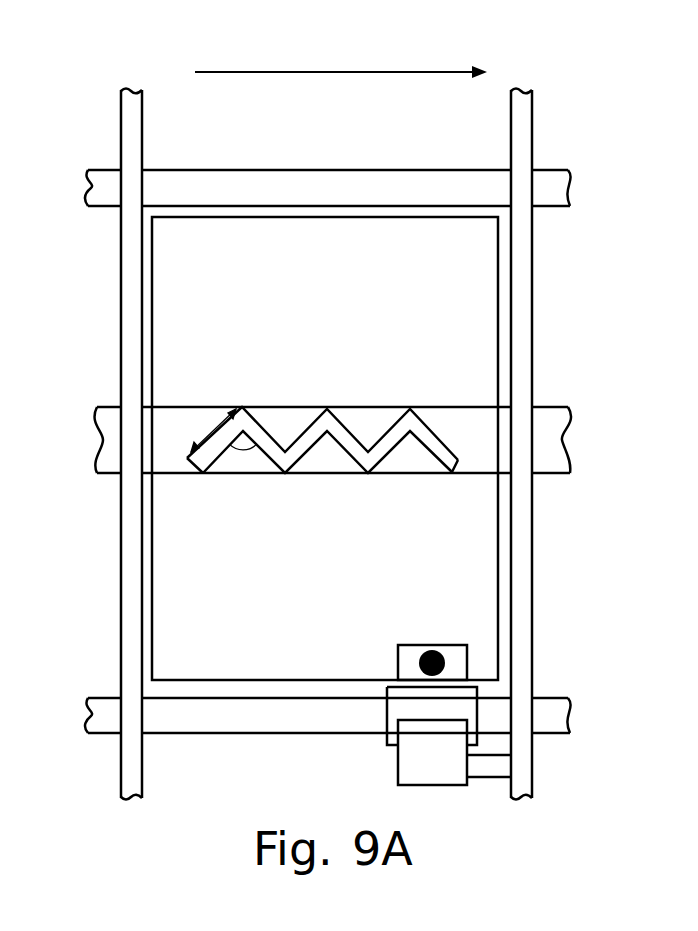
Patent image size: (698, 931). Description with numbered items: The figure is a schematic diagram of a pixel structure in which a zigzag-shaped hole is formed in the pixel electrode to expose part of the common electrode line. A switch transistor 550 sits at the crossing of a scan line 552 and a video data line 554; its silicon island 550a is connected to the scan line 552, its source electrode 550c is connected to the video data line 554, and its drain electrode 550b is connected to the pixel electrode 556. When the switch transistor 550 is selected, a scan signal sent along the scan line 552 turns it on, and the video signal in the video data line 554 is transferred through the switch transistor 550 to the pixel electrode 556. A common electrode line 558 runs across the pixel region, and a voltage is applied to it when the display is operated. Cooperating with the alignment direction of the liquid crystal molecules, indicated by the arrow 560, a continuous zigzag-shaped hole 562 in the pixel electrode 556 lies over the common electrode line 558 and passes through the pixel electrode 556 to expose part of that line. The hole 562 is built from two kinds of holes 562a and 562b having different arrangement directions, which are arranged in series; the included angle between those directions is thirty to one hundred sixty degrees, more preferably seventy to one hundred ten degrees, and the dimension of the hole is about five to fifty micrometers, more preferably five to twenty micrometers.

The switch transistor 550 is at (541, 715).
The silicon island 550a is at (457, 710).
The drain electrode 550b is at (457, 663).
The source electrode 550c is at (457, 765).
The scan line 552 is at (93, 185).
The video data line 554 is at (131, 88).
The pixel electrode 556 is at (180, 293).
The common electrode line 558 is at (112, 437).
The arrow 560 is at (337, 73).
The continuous zigzag-shaped hole 562 is at (436, 384).
The hole 562a is at (388, 442).
The hole 562b is at (430, 443).